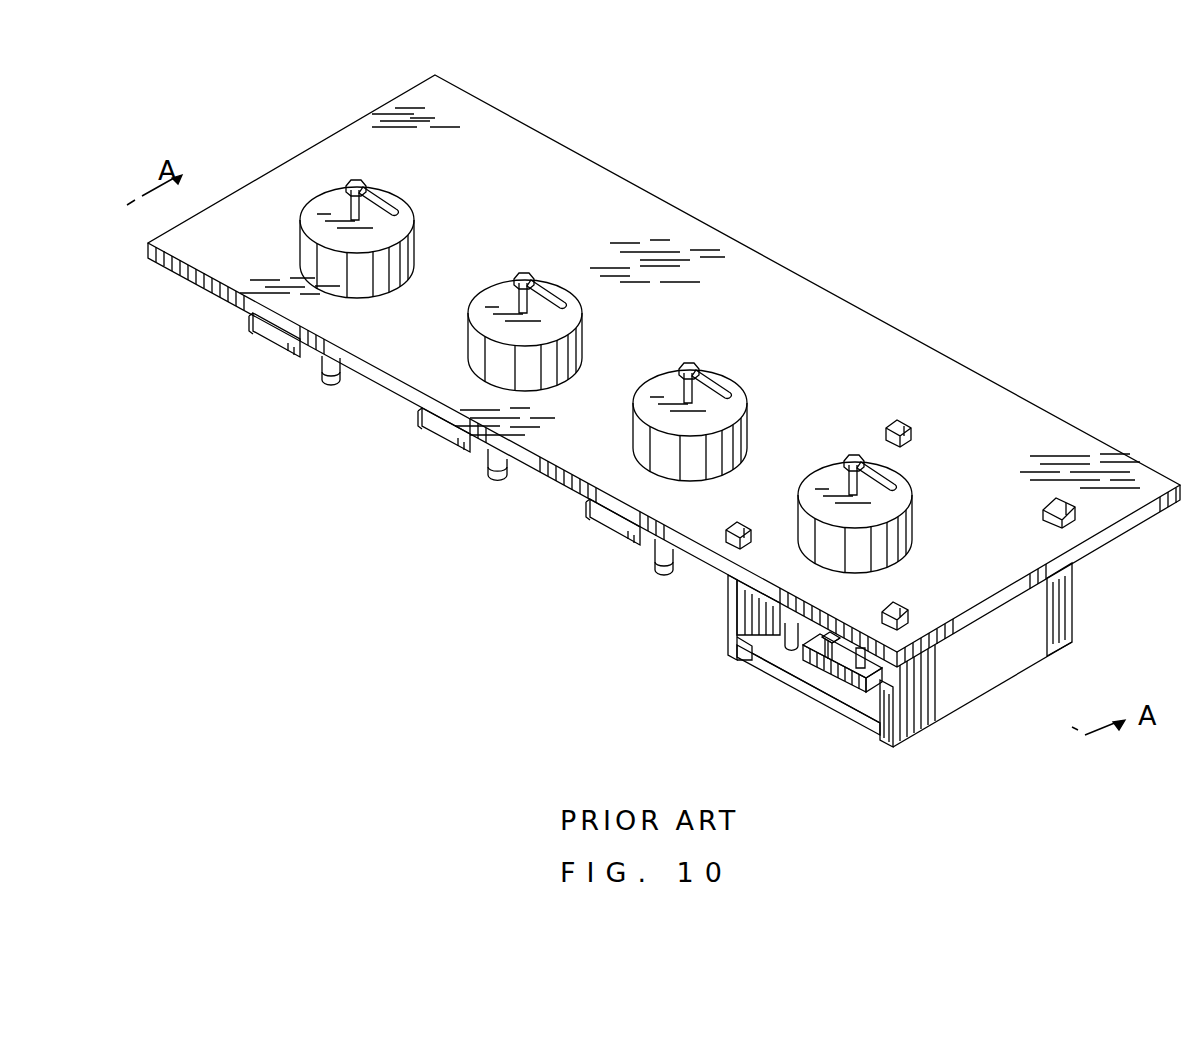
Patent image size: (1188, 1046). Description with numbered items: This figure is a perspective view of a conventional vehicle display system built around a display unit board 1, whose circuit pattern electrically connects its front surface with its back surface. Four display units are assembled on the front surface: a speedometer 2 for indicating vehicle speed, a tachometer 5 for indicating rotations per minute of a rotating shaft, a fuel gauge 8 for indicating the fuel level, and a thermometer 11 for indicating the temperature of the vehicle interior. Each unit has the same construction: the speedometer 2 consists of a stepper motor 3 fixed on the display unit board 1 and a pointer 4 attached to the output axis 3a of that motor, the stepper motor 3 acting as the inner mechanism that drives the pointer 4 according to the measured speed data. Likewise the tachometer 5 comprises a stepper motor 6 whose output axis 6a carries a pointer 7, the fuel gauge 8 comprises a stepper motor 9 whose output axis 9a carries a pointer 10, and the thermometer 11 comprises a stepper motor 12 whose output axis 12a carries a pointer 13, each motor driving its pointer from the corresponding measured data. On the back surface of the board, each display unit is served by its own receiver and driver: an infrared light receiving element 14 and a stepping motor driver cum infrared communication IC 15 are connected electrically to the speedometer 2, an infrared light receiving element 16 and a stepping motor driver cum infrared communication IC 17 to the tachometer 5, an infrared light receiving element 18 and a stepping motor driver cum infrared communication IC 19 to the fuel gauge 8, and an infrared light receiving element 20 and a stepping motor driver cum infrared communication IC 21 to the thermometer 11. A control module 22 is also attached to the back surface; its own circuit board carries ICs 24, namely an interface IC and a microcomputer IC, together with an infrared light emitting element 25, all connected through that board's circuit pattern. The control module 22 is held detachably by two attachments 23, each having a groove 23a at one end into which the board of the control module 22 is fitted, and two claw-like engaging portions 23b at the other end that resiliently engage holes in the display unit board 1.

The display unit board 1 is at (668, 192).
The speedometer 2 is at (295, 216).
The stepper motor 3 is at (305, 259).
The output axis 3a is at (350, 211).
The pointer 4 is at (384, 208).
The tachometer 5 is at (468, 298).
The stepper motor 6 is at (494, 350).
The output axis 6a is at (522, 303).
The pointer 7 is at (554, 297).
The fuel gauge 8 is at (635, 410).
The stepper motor 9 is at (659, 440).
The output axis 9a is at (692, 398).
The pointer 10 is at (724, 393).
The thermometer 11 is at (789, 513).
The stepper motor 12 is at (912, 520).
The output axis 12a is at (847, 487).
The pointer 13 is at (892, 480).
The infrared light receiving element 14 is at (322, 373).
The stepping motor driver cum infrared communication IC 15 is at (255, 324).
The infrared light receiving element 16 is at (490, 467).
The stepping motor driver cum infrared communication IC 17 is at (432, 430).
The infrared light receiving element 18 is at (660, 552).
The stepping motor driver cum infrared communication IC 19 is at (596, 517).
The infrared light receiving element 20 is at (831, 695).
The stepping motor driver cum infrared communication IC 21 is at (728, 615).
The control module 22 is at (822, 665).
The attachment 23 is at (717, 610).
The groove 23a is at (899, 422).
The claw-like engaging portion 23b is at (725, 547).
The ICs 24 is at (865, 655).
The infrared light emitting element 25 is at (787, 653).